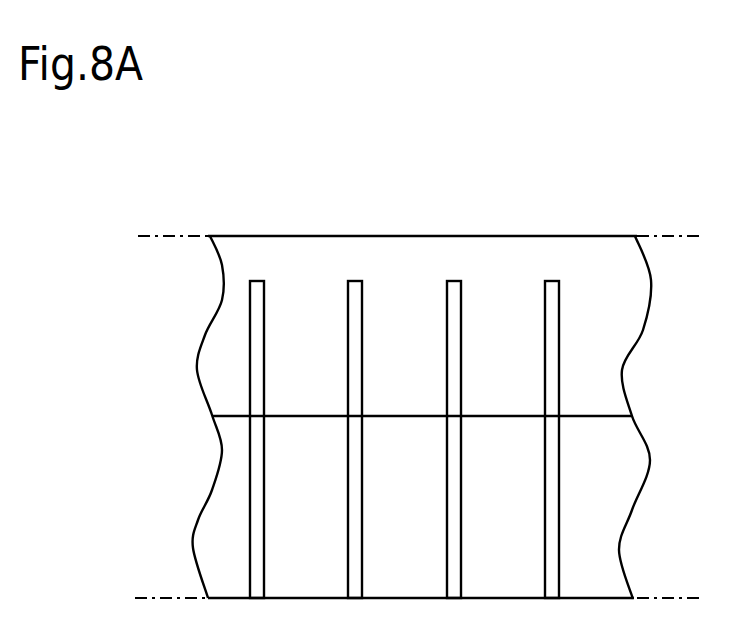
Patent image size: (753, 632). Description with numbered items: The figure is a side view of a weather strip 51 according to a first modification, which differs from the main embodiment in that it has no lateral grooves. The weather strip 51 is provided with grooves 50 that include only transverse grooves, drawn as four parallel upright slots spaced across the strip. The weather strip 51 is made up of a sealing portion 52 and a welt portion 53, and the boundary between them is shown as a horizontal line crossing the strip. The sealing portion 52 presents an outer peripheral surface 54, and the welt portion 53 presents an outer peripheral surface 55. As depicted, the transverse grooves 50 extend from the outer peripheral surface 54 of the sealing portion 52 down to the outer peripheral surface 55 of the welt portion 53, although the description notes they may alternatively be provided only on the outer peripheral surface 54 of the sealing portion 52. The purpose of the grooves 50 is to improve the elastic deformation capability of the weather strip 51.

The grooves 50 is at (264, 337).
The weather strip 51 is at (208, 219).
The sealing portion 52 is at (222, 263).
The welt portion 53 is at (218, 442).
The outer peripheral surface of the sealing portion 54 is at (226, 356).
The outer peripheral surface of the welt portion 55 is at (232, 518).